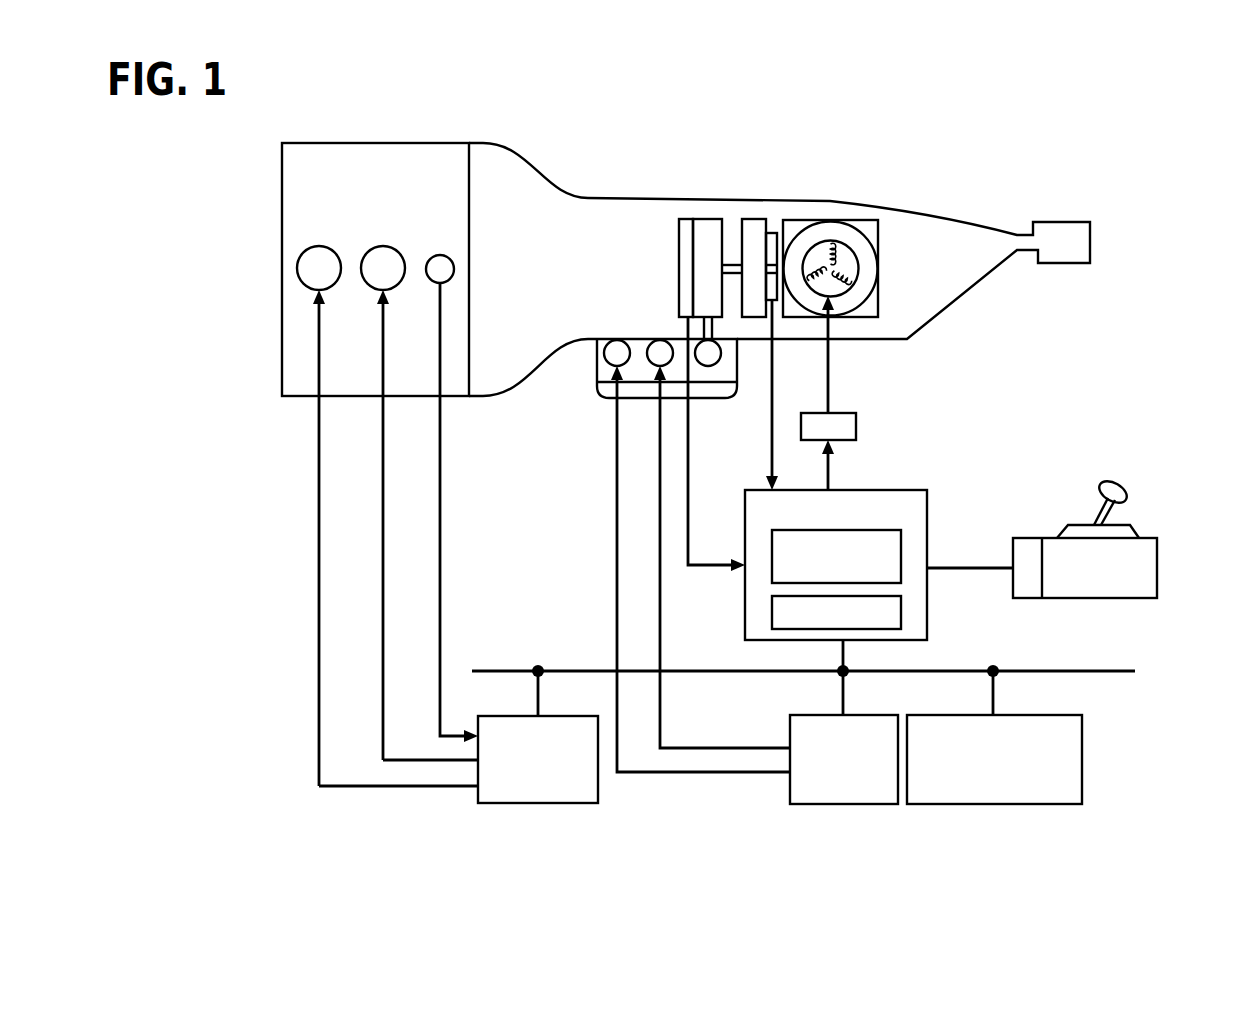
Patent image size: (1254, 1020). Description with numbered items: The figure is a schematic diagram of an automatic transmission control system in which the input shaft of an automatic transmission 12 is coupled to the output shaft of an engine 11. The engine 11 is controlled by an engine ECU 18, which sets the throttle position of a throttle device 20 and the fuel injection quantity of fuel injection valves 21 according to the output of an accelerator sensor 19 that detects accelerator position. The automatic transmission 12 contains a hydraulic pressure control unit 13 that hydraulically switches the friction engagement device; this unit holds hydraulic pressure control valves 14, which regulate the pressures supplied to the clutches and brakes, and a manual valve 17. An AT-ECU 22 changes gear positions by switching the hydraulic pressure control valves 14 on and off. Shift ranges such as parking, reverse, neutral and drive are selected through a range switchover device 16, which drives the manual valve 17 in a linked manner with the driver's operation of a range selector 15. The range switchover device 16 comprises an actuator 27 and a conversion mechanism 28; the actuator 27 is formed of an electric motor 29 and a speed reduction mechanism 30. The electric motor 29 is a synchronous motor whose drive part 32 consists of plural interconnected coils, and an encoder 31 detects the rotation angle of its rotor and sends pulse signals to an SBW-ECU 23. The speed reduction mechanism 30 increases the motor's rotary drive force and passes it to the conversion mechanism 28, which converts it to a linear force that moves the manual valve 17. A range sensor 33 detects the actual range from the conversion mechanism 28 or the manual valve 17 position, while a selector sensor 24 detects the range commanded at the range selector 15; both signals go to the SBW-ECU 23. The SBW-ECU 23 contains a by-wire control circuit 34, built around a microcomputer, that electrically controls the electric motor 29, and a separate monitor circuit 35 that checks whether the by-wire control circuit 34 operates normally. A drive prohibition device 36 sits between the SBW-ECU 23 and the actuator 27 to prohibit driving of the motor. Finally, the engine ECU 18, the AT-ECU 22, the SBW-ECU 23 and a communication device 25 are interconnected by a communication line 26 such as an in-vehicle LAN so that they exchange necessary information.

The engine 11 is at (370, 143).
The automatic transmission 12 is at (605, 198).
The hydraulic pressure control unit 13 is at (597, 366).
The hydraulic pressure control valves 14 is at (612, 340).
The range selector 15 is at (1157, 565).
The range switchover device 16 is at (729, 175).
The manual valve 17 is at (708, 366).
The engine ECU 18 is at (538, 805).
The accelerator sensor 19 is at (442, 255).
The throttle device 20 is at (322, 246).
The fuel injection valves 21 is at (386, 246).
The AT-ECU 22 is at (840, 806).
The SBW-ECU 23 is at (928, 513).
The selector sensor 24 is at (1032, 538).
The communication device 25 is at (990, 806).
The communication line 26 is at (1112, 675).
The actuator 27 is at (830, 208).
The conversion mechanism 28 is at (710, 219).
The electric motor 29 is at (795, 228).
The speed reduction mechanism 30 is at (755, 219).
The encoder 31 is at (772, 233).
The drive part 32 is at (848, 236).
The range sensor 33 is at (688, 219).
The by-wire control circuit 34 is at (772, 548).
The monitor circuit 35 is at (772, 612).
The drive prohibition device 36 is at (865, 425).